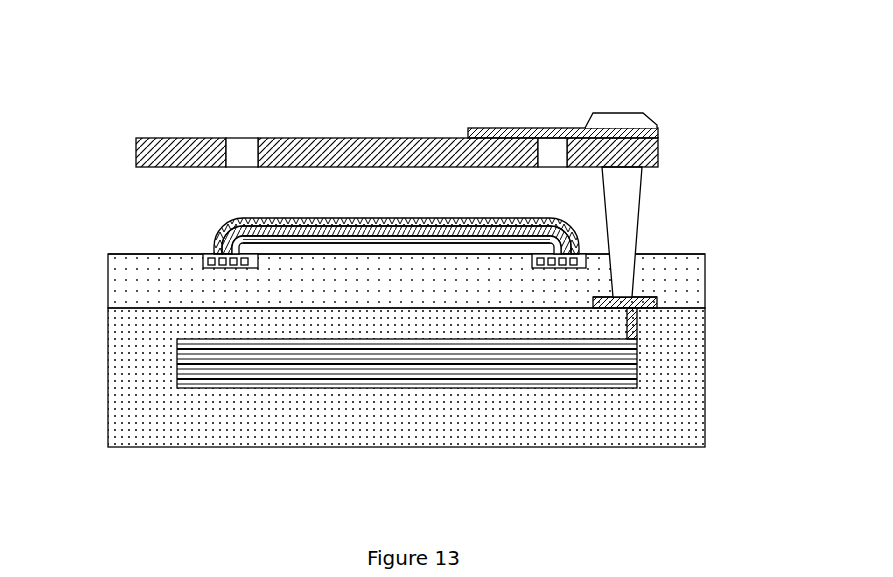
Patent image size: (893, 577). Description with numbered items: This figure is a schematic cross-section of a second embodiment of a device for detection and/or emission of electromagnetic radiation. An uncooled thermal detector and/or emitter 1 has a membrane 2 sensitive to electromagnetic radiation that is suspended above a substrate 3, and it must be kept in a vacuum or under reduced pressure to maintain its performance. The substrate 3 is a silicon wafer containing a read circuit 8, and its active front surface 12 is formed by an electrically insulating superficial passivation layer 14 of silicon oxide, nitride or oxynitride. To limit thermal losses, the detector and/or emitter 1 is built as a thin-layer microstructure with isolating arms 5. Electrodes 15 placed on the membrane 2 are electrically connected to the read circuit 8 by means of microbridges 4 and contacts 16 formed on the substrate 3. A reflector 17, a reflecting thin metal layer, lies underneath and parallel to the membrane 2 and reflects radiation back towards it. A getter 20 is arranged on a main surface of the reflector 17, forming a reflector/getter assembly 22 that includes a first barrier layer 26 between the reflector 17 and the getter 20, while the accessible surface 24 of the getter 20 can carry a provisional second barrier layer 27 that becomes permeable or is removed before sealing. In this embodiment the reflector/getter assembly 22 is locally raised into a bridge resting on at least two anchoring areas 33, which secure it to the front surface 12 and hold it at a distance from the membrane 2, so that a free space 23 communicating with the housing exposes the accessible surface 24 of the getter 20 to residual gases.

The uncooled thermal detector and/or emitter 1 is at (424, 122).
The membrane 2 is at (357, 101).
The substrate 3 is at (155, 368).
The microbridges 4 is at (625, 210).
The isolating arms 5 is at (192, 140).
The read circuit 8 is at (253, 367).
The front surface 12 is at (140, 252).
The superficial passivation layer 14 is at (126, 288).
The electrodes 15 is at (517, 130).
The contacts 16 is at (650, 298).
The reflector 17 is at (334, 212).
The getter 20 is at (264, 245).
The reflector/getter assembly 22 is at (360, 243).
The free space 23 is at (252, 220).
The accessible surface 24 is at (402, 240).
The first barrier layer 26 is at (510, 230).
The second barrier layer 27 is at (430, 240).
The anchoring areas 33 is at (637, 253).